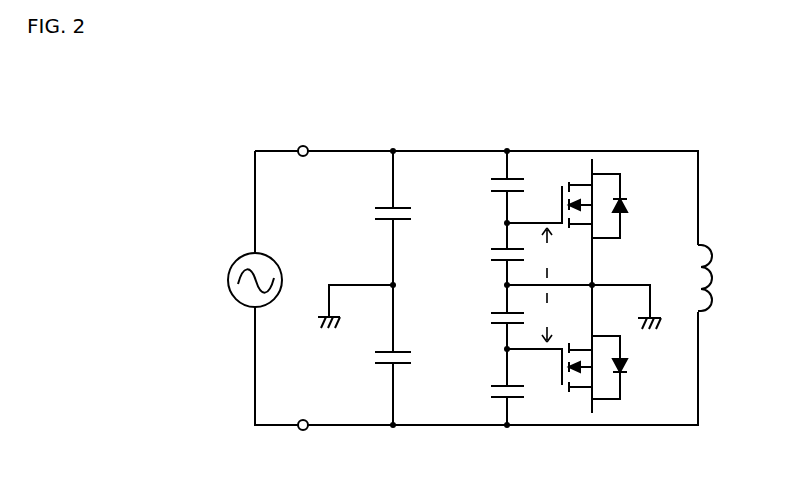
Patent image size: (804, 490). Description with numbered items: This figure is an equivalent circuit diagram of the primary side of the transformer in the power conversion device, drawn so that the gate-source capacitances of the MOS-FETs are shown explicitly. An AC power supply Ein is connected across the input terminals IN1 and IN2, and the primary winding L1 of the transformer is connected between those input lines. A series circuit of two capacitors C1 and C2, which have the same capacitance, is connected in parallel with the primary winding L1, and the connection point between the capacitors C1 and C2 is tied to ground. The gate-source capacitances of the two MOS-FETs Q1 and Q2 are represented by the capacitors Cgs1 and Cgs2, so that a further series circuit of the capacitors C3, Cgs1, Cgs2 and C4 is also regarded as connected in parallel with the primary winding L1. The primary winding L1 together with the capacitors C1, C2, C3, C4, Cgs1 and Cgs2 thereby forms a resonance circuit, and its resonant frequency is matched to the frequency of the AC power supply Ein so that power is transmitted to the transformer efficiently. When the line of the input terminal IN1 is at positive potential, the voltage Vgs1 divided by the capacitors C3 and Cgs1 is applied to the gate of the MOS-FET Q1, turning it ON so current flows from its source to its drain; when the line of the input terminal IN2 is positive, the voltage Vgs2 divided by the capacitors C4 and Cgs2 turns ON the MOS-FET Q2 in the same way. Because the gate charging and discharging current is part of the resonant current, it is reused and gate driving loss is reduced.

The input terminal IN1 is at (302, 139).
The input terminal IN2 is at (302, 436).
The AC power supply Ein is at (250, 270).
The capacitor C1 is at (398, 200).
The capacitor C2 is at (398, 346).
The capacitor C3 is at (492, 184).
The capacitor C4 is at (492, 387).
The capacitor expressing gate-source capacitance Cgs1 is at (485, 255).
The capacitor expressing gate-source capacitance Cgs2 is at (485, 318).
The voltage Vgs1 is at (560, 253).
The voltage Vgs2 is at (560, 317).
The MOS-FET Q1 is at (598, 222).
The MOS-FET Q2 is at (598, 349).
The primary winding L1 is at (717, 273).